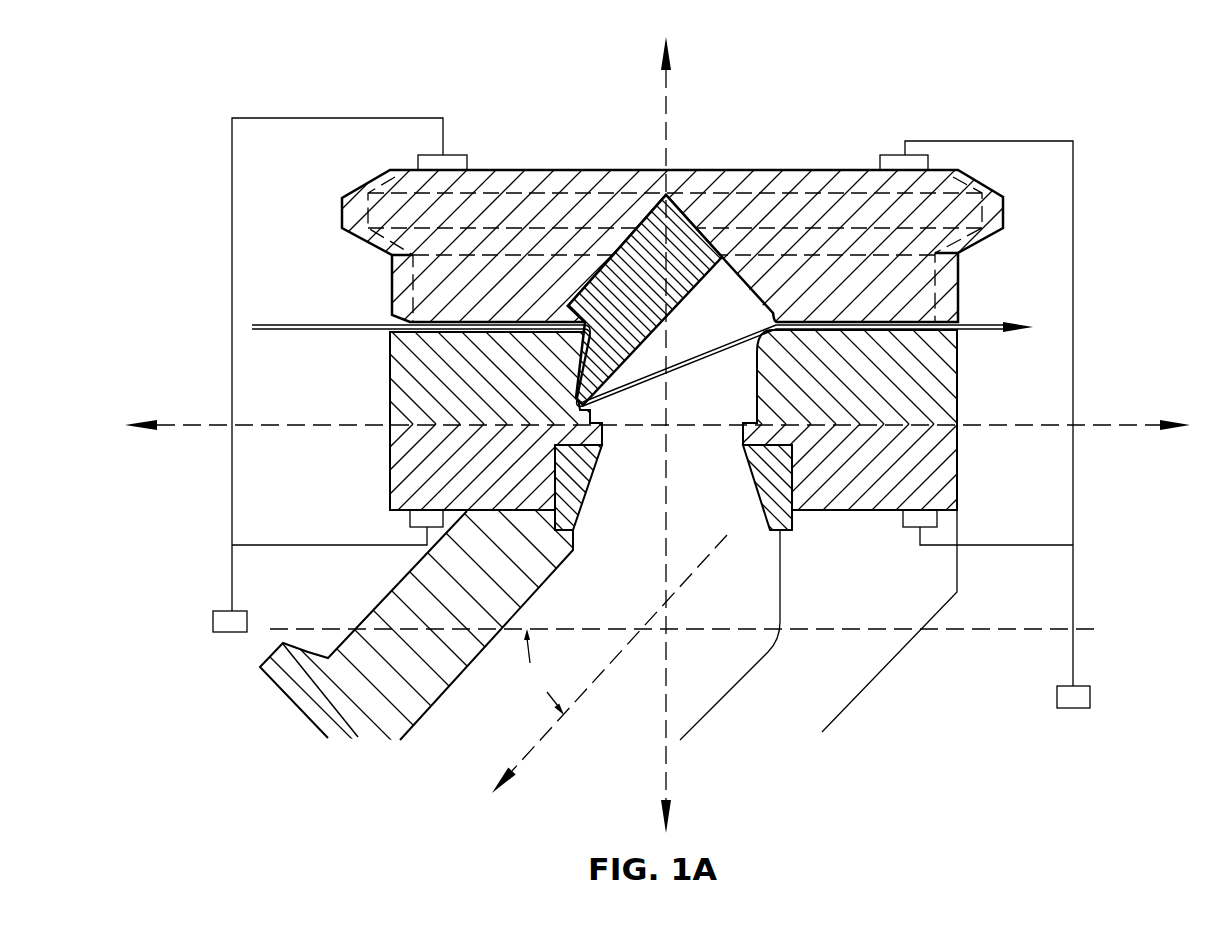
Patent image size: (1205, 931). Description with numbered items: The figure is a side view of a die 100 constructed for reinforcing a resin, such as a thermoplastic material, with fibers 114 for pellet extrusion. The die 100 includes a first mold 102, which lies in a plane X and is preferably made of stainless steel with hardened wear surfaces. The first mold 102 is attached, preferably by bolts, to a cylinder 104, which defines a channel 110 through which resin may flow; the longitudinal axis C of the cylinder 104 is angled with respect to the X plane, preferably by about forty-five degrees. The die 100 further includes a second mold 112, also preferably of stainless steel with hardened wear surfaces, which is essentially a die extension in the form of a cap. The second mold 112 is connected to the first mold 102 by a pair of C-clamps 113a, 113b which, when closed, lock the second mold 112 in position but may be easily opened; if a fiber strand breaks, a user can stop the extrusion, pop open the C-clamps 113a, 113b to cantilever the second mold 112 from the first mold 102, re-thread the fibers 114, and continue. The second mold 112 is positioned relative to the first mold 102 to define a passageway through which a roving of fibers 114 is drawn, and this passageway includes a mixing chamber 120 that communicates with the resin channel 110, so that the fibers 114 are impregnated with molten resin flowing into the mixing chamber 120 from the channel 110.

The die 100 is at (545, 105).
The first mold 102 is at (390, 456).
The cylinder 104 is at (410, 568).
The channel 110 is at (507, 734).
The second mold 112 is at (372, 181).
The C-clamp 113a is at (232, 218).
The C-clamp 113b is at (1075, 232).
The fibers 114 is at (290, 333).
The mixing chamber 120 is at (723, 411).